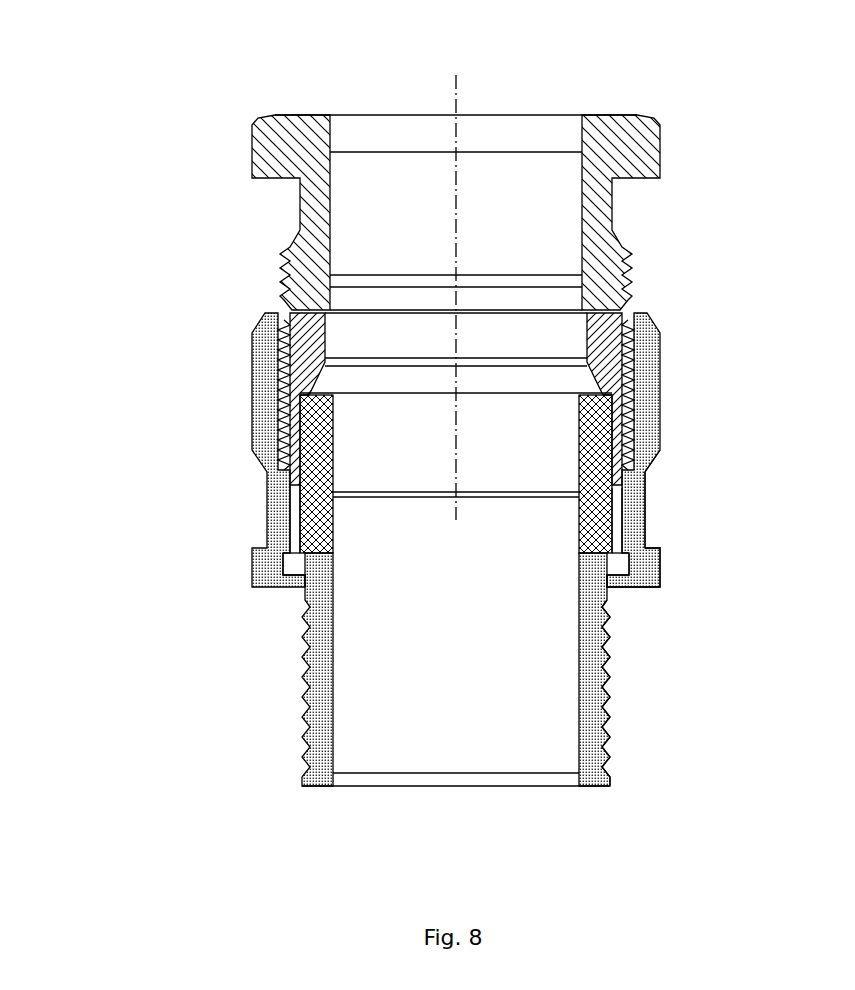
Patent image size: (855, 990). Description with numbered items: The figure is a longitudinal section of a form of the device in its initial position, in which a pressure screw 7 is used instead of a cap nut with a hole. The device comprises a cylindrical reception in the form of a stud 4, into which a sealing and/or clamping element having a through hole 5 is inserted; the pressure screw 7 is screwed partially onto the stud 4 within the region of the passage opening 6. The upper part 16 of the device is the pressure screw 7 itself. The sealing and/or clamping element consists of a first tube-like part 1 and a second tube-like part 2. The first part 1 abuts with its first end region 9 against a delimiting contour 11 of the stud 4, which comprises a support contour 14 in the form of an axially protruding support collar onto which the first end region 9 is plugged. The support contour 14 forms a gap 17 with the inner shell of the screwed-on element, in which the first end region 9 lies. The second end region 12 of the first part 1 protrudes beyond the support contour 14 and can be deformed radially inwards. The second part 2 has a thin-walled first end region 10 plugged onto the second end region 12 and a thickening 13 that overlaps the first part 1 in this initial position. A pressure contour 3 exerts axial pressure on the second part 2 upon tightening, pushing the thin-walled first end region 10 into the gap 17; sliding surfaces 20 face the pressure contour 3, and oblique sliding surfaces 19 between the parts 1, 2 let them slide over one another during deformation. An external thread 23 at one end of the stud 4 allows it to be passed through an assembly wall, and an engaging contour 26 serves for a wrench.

The first tube-like part 1 is at (280, 465).
The second tube-like part 2 is at (290, 367).
The pressure contour 3 is at (600, 292).
The stud 4 is at (223, 685).
The through hole 5 is at (380, 475).
The passage opening 6 is at (565, 478).
The pressure screw 7 is at (252, 148).
The first end region 9 is at (297, 532).
The thin-walled first end region 10 is at (643, 490).
The delimiting contour 11 is at (302, 553).
The second end region 12 is at (290, 405).
The thickening 13 is at (612, 358).
The support contour 14 is at (623, 550).
The upper connector part 16 is at (333, 108).
The gap 17 is at (643, 520).
The oblique sliding surfaces 19 is at (615, 400).
The sliding surfaces 20 is at (635, 320).
The external thread 23 is at (605, 673).
The engaging contour 26 is at (662, 437).